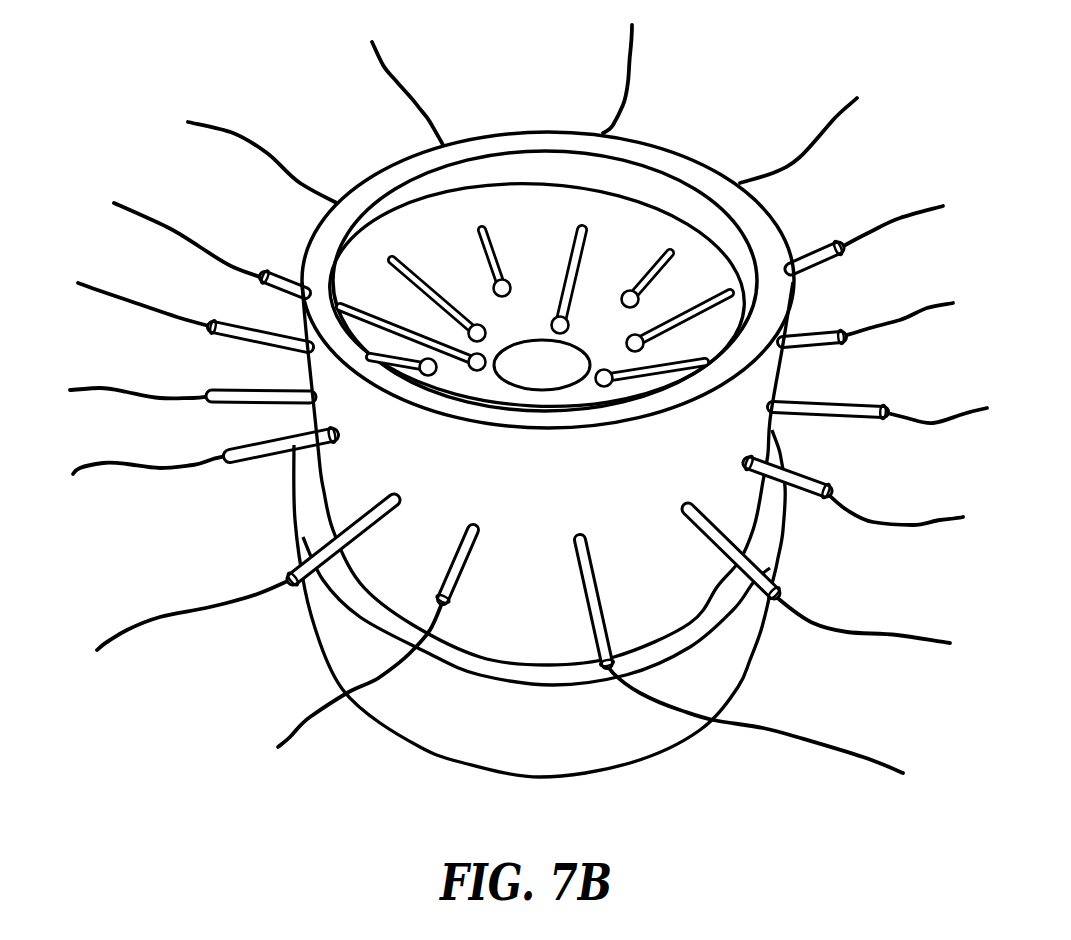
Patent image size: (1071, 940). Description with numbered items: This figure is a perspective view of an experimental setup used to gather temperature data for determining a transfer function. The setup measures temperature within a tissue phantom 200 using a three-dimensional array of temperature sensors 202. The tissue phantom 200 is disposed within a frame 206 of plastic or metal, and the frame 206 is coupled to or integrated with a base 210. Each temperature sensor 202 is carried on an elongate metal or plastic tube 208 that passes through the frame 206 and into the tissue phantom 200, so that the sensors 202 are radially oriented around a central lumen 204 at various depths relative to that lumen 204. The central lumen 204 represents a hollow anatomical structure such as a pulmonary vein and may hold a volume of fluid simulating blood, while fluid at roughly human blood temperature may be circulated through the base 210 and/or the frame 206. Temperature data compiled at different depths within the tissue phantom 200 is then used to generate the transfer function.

The tissue phantom 200 is at (488, 312).
The temperature sensor 202 is at (566, 325).
The central lumen 204 is at (535, 362).
The frame 206 is at (757, 233).
The elongate tube 208 is at (821, 338).
The base 210 is at (768, 523).